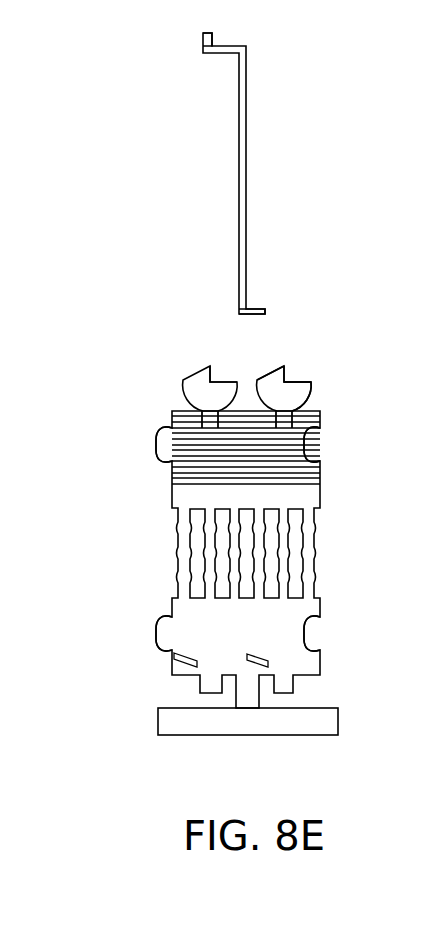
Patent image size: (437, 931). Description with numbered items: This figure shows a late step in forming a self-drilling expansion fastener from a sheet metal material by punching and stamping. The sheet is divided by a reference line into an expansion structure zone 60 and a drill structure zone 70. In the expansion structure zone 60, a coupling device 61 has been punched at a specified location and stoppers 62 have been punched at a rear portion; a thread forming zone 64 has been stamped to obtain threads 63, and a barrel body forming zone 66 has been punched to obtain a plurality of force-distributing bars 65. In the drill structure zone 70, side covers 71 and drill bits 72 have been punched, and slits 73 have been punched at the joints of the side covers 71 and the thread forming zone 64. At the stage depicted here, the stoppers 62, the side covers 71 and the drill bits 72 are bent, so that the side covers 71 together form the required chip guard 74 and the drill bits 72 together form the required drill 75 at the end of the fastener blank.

The expansion structure zone 60 is at (76, 452).
The coupling device 61 is at (330, 448).
The stoppers 62 is at (255, 316).
The threads 63 is at (310, 486).
The thread forming zone 64 is at (132, 412).
The force-distributing bars 65 is at (186, 543).
The barrel body forming zone 66 is at (132, 486).
The drill structure zone 70 is at (233, 225).
The side covers 71 is at (226, 52).
The drill bits 72 is at (200, 40).
The slits 73 is at (298, 423).
The chip guard 74 is at (326, 385).
The drill 75 is at (297, 345).